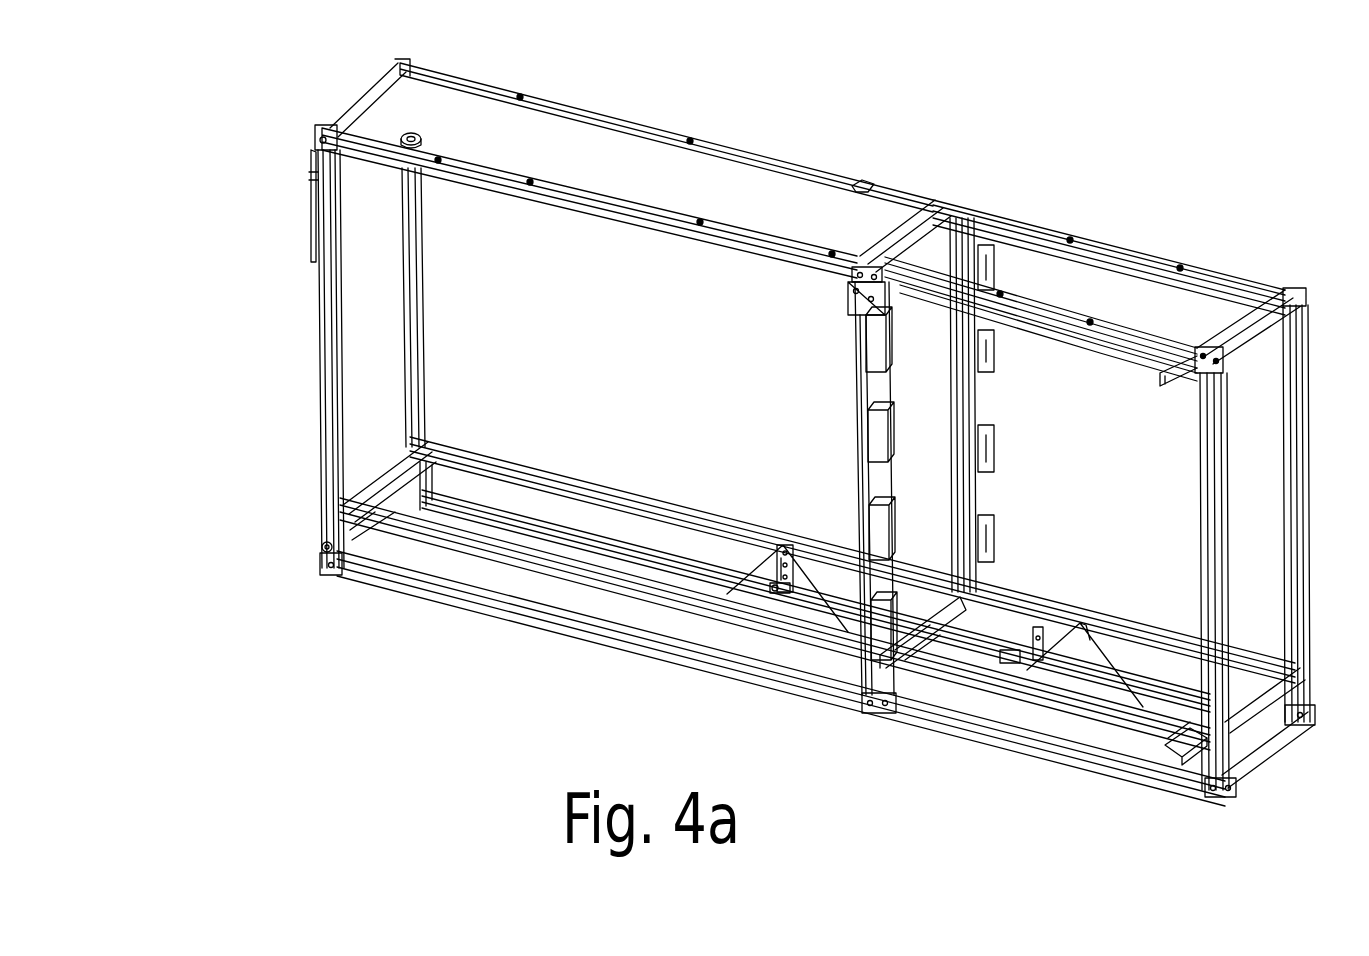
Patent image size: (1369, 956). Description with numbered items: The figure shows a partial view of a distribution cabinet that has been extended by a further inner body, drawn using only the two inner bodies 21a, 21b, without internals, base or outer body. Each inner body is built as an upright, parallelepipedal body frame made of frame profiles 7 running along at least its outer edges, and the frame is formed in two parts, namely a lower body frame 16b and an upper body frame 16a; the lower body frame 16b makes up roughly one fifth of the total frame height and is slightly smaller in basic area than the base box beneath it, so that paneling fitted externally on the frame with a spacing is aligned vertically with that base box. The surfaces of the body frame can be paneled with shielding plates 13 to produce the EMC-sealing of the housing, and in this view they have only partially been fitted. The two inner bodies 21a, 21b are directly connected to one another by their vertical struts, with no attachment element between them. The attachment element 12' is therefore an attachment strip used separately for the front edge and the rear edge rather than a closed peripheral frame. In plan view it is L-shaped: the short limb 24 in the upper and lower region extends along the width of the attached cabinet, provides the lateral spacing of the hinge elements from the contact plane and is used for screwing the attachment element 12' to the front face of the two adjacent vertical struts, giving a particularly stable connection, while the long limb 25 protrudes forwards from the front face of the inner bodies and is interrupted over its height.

The shielding plates 13 is at (769, 258).
The inner body 21a is at (828, 141).
The attached inner body 21b is at (1108, 209).
The upper body frame 16a is at (282, 253).
The lower body frame 16b is at (287, 510).
The short limb 24 is at (848, 292).
The long limb 25 is at (898, 342).
The frame profiles 7 is at (935, 423).
The attachment element 12' is at (910, 517).